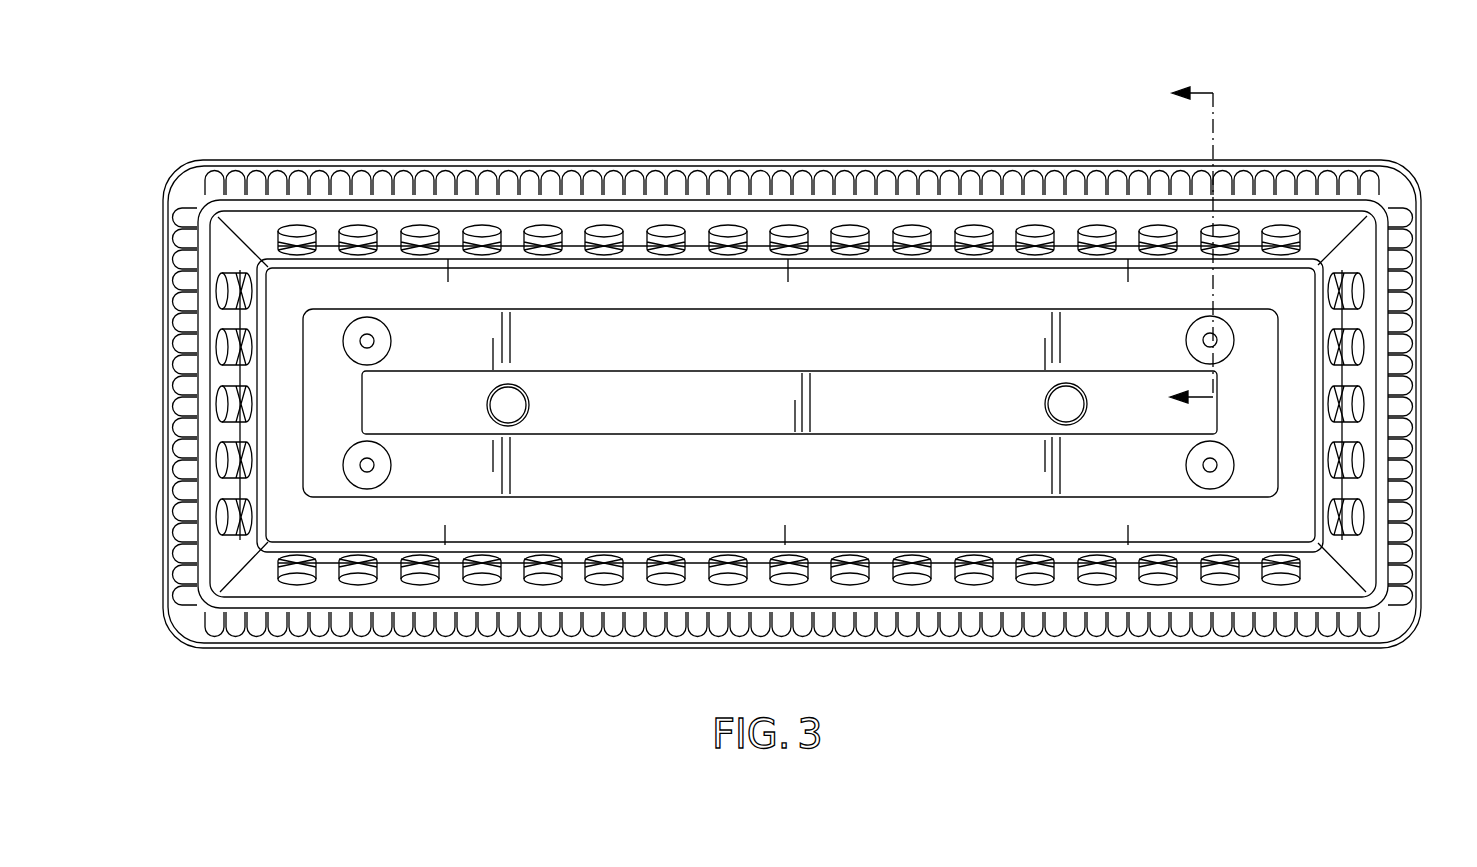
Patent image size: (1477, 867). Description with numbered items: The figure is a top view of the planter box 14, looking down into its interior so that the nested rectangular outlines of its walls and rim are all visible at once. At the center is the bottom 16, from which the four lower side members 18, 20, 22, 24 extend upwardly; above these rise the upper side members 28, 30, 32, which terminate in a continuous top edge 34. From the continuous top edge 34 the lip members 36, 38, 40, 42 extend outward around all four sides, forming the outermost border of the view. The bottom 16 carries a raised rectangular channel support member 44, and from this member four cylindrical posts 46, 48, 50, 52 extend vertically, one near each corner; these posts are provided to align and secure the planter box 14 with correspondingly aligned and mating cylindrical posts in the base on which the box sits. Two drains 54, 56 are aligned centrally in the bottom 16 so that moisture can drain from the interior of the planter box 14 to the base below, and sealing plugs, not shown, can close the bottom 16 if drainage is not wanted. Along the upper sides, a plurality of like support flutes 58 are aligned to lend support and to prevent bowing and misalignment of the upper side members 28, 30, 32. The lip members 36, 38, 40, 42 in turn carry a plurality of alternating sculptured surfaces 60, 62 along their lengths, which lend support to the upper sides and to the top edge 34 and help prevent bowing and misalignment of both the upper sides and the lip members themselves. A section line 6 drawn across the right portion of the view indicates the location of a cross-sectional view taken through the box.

The section line 6- 6 is at (1182, 244).
The planter box 14 is at (1352, 113).
The bottom 16 is at (725, 418).
The lower side member 18 is at (218, 425).
The lower side member 20 is at (628, 553).
The lower side member 22 is at (1333, 490).
The lower side member 24 is at (637, 250).
The upper side member 28 is at (818, 580).
The upper side member 30 is at (1358, 548).
The upper side member 32 is at (768, 200).
The continuous top edge 34 is at (330, 240).
The lip member 36 is at (177, 500).
The lip member 38 is at (458, 628).
The lip member 40 is at (1405, 460).
The lip member 42 is at (960, 178).
The raised rectangular channel support member 44 is at (790, 403).
The cylindrical post 46 is at (386, 340).
The cylindrical post 48 is at (388, 466).
The cylindrical post 50 is at (1186, 466).
The cylindrical post 52 is at (1186, 340).
The drain 54 is at (530, 405).
The drain 56 is at (1088, 402).
The support flute 58 is at (297, 573).
The sculptured surface 60 is at (206, 640).
The sculptured surface 62 is at (232, 628).